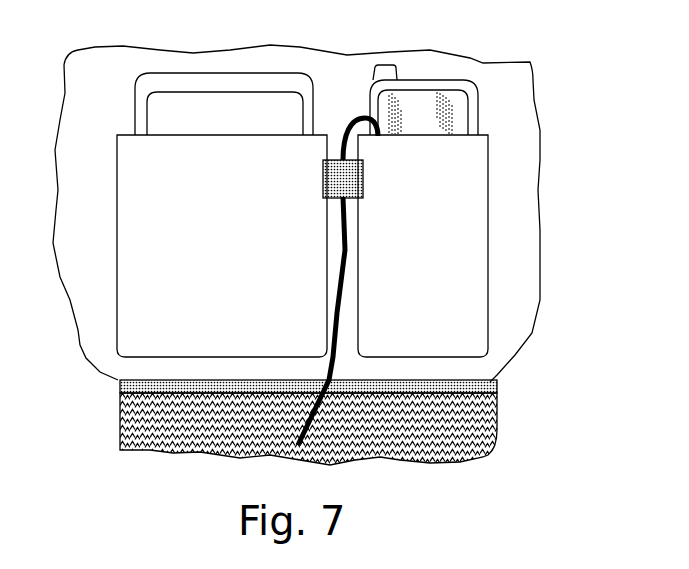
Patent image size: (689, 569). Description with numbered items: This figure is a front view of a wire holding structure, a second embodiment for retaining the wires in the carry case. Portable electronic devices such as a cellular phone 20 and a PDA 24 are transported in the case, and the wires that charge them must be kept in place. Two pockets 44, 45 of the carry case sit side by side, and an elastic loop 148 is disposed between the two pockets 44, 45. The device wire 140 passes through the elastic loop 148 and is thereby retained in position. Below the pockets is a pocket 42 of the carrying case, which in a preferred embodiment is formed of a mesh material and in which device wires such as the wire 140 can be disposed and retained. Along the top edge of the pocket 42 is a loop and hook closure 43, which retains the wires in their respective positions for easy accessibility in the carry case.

The cellular phone 20 is at (440, 80).
The PDA 24 is at (158, 88).
The pocket 42 is at (500, 408).
The loop and hook closure 43 is at (497, 387).
The pocket 44 is at (447, 257).
The pocket 45 is at (232, 257).
The device wire 140 is at (297, 428).
The elastic loop 148 is at (352, 178).